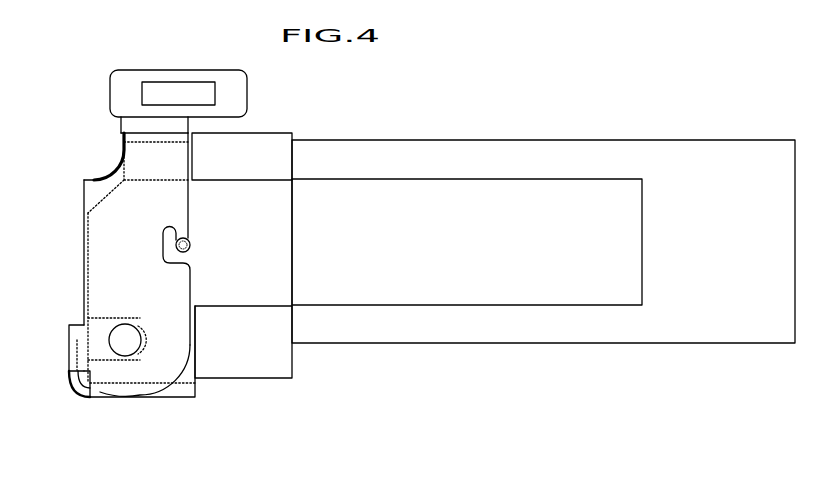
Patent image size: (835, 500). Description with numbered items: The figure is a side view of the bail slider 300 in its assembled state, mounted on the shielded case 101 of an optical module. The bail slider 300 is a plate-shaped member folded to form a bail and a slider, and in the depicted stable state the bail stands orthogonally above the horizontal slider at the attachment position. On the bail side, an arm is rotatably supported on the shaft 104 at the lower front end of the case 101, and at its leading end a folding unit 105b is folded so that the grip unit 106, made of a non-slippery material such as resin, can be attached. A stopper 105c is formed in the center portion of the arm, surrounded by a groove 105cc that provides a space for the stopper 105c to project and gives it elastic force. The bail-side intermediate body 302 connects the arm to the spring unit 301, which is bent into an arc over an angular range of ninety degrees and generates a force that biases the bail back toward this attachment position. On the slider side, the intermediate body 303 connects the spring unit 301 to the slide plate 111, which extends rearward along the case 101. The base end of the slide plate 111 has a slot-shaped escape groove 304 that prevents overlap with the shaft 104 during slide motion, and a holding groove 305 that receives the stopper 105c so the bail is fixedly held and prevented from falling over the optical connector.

The bail slider 300 is at (533, 68).
The shielded case 101 is at (667, 139).
The slide plate 111 is at (387, 205).
The grip unit 106 is at (135, 82).
The folding unit 105b is at (135, 138).
The groove 105cc is at (163, 240).
The stopper 105c is at (224, 235).
The holding groove 305 is at (191, 243).
The escape groove 304 is at (107, 317).
The shaft 104 is at (133, 344).
The intermediate body 303 is at (157, 398).
The intermediate body 302 is at (72, 344).
The spring unit 301 is at (72, 387).